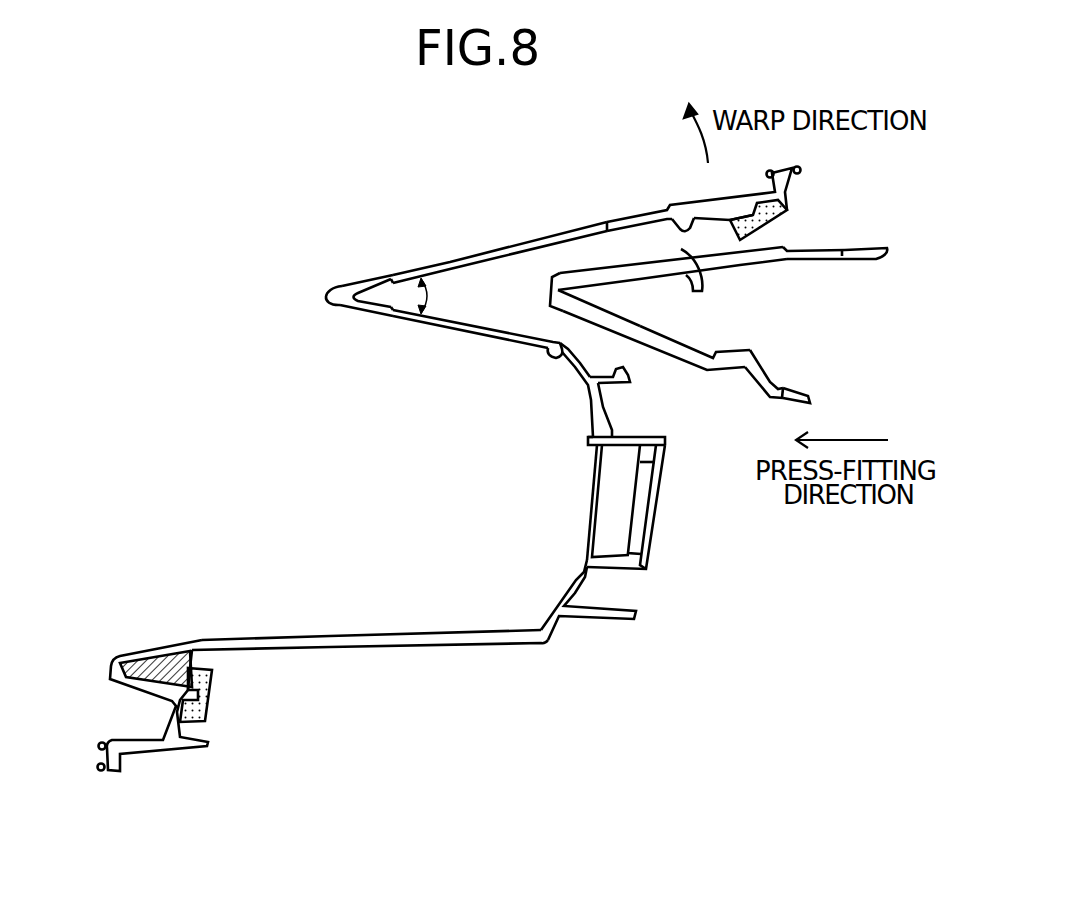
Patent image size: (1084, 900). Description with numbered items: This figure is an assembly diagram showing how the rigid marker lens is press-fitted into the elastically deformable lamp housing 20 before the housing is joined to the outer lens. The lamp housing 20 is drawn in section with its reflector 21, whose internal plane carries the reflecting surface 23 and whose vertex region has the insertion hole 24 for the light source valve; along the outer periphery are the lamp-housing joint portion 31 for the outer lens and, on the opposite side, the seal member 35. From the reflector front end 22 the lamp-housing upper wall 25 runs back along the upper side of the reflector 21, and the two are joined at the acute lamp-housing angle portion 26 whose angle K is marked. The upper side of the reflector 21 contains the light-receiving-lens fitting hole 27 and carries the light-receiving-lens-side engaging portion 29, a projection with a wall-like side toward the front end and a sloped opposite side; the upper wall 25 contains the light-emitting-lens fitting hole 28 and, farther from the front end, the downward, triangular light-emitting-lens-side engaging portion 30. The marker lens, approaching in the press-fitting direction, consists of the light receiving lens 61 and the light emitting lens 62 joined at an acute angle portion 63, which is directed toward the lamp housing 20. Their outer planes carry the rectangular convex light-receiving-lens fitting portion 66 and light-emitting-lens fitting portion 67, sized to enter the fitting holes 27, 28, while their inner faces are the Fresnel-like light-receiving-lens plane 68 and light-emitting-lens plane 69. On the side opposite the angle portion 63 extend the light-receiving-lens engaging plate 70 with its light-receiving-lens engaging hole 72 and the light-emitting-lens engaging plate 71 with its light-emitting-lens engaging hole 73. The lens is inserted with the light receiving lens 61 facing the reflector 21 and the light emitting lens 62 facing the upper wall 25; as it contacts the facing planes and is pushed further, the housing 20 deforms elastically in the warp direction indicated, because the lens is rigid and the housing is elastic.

The lamp housing 20 is at (401, 651).
The reflector 21 is at (613, 415).
The reflector front end 22 is at (327, 300).
The reflecting surface 23 is at (557, 605).
The insertion hole 24 is at (602, 558).
The lamp-housing upper wall 25 is at (640, 212).
The lamp-housing angle portion 26 is at (338, 290).
The light-receiving-lens fitting hole 27 is at (395, 312).
The light-emitting-lens fitting hole 28 is at (395, 274).
The light-receiving-lens-side engaging portion 29 is at (627, 377).
The light-emitting-lens-side engaging portion 30 is at (683, 227).
The lamp-housing joint portion 31 is at (98, 757).
The seal member 35 is at (203, 685).
The light receiving lens 61 is at (658, 335).
The light emitting lens 62 is at (748, 257).
The angle portion 63 is at (548, 296).
The light-receiving-lens fitting portion 66 is at (563, 313).
The light-emitting-lens fitting portion 67 is at (593, 268).
The light-receiving-lens plane 68 is at (612, 310).
The light-emitting-lens plane 69 is at (692, 275).
The light-receiving-lens engaging plate 70 is at (767, 373).
The light-emitting-lens engaging plate 71 is at (798, 250).
The light-receiving-lens engaging hole 72 is at (783, 390).
The light-emitting-lens engaging hole 73 is at (850, 254).
The angle K is at (428, 272).